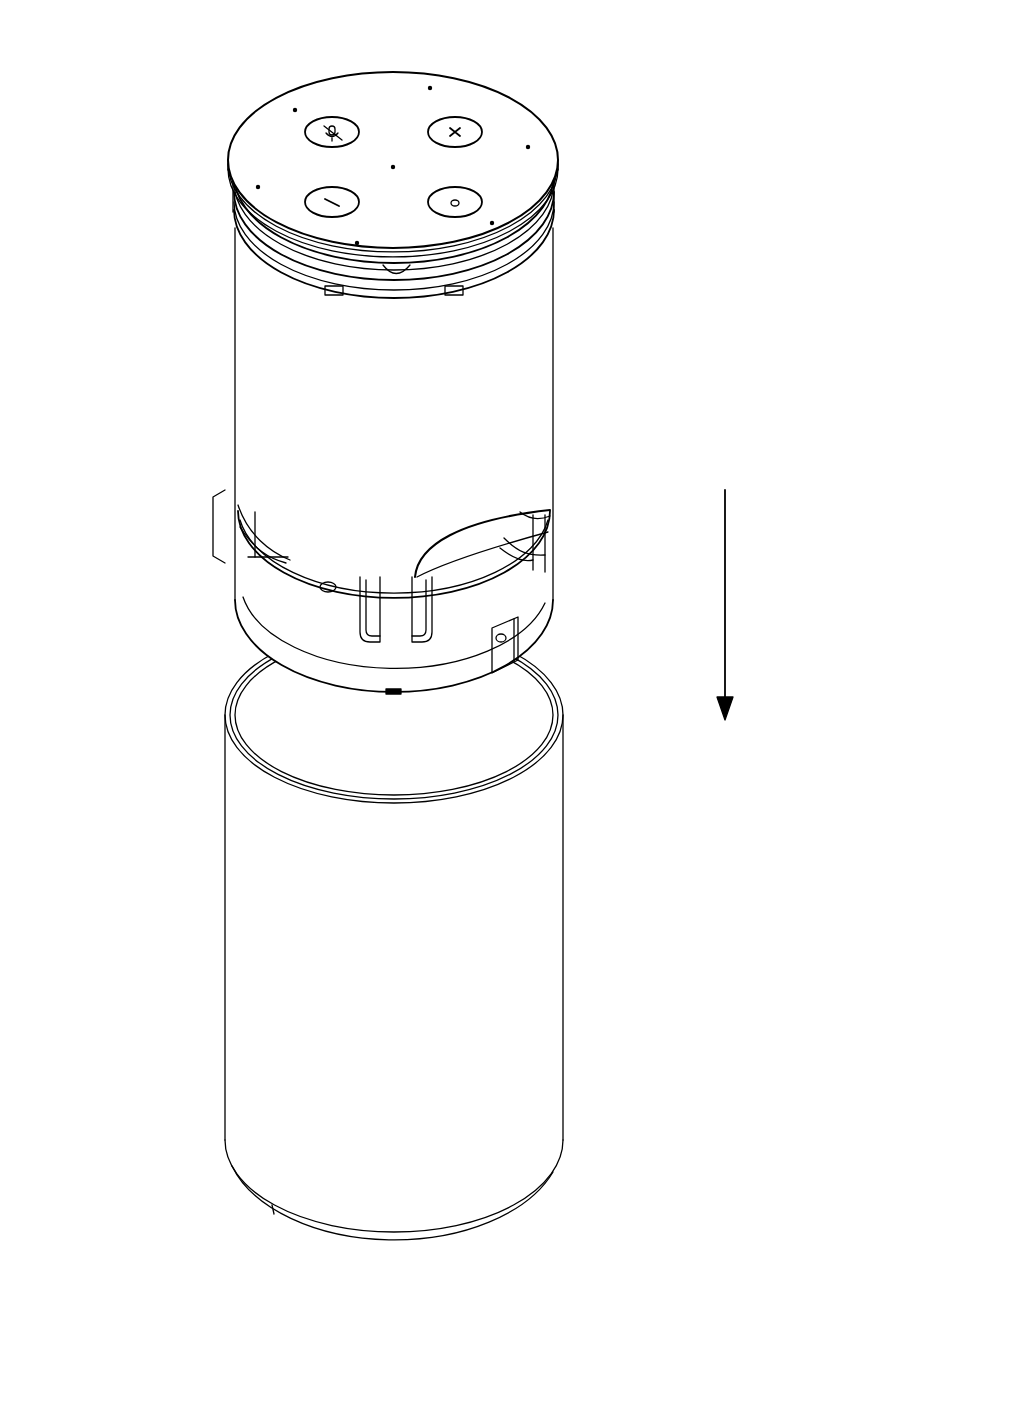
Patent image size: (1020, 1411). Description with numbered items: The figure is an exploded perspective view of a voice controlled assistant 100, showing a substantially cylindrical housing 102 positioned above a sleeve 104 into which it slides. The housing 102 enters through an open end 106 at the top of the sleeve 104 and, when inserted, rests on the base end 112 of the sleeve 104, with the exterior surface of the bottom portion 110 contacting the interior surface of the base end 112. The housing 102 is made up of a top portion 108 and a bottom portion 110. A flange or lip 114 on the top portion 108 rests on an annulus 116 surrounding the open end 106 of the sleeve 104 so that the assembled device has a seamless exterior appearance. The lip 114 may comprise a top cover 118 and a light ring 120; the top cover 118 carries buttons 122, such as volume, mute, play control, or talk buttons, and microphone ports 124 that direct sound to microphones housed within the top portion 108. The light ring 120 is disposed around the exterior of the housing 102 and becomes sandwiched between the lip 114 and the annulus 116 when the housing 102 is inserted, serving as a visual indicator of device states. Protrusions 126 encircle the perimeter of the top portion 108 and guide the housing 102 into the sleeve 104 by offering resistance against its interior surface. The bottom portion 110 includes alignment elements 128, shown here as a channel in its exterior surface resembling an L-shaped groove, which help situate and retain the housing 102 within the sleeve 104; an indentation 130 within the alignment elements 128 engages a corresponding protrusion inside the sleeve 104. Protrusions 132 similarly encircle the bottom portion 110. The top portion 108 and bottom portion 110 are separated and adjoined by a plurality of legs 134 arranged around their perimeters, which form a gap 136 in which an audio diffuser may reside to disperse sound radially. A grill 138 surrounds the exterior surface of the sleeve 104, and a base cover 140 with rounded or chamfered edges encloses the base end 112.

The voice controlled assistant 100 is at (516, 49).
The housing 102 is at (587, 418).
The sleeve 104 is at (586, 898).
The open end 106 is at (211, 640).
The top portion 108 is at (553, 383).
The bottom portion 110 is at (553, 583).
The base end 112 is at (218, 1208).
The lip 114 is at (580, 209).
The annulus 116 is at (225, 694).
The top cover 118 is at (272, 100).
The light ring 120 is at (232, 192).
The buttons 122 is at (505, 110).
The microphone ports 124 is at (248, 180).
The protrusions 126 is at (330, 295).
The alignment elements 128 is at (560, 599).
The indentation 130 is at (515, 642).
The protrusions 132 is at (393, 697).
The plurality of legs 134 is at (550, 535).
The gap 136 is at (213, 527).
The grill 138 is at (225, 945).
The base cover 140 is at (540, 1185).